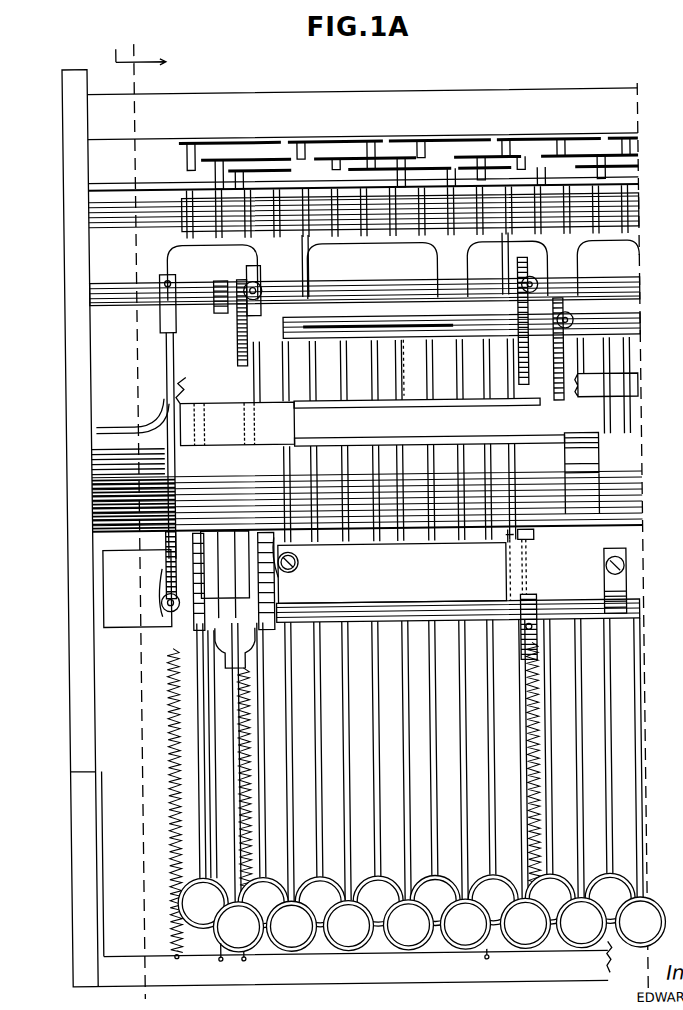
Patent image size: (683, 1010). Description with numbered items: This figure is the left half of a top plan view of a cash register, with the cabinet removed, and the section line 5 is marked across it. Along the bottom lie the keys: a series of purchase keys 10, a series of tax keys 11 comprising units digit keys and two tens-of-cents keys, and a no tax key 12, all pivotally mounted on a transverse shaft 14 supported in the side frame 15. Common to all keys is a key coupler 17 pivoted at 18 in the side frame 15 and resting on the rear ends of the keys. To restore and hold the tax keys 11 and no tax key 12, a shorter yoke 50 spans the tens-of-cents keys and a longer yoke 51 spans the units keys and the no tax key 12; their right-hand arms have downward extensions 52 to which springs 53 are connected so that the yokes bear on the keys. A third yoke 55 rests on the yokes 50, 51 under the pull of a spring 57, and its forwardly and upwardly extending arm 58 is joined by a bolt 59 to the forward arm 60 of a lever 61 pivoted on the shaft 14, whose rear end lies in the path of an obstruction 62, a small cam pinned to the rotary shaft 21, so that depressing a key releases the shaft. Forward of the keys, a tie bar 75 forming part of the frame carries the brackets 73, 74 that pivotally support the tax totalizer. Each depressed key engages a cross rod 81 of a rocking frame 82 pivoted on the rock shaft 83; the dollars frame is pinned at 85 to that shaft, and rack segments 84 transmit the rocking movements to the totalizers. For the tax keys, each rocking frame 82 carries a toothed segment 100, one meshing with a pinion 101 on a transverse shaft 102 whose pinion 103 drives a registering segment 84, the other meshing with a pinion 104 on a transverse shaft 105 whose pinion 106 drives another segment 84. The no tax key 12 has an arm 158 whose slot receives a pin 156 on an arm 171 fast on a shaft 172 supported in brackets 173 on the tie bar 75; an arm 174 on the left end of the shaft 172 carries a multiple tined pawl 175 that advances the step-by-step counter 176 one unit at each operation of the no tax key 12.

The section line 5- 5 is at (382, 516).
The amount or purchase keys 10 is at (630, 954).
The tax keys 11 is at (200, 928).
The no tax key 12 is at (512, 954).
The transverse shaft 14 is at (105, 515).
The side frame 15 is at (87, 648).
The key coupler 17 is at (163, 356).
The pivot 18 is at (100, 440).
The rotary shaft 21 is at (100, 300).
The yoke member 50 is at (228, 404).
The yoke member 51 is at (380, 404).
The downward extensions 52 is at (530, 548).
The springs 53 is at (240, 750).
The third yoke 55 is at (322, 404).
The spring 57 is at (160, 840).
The forwardly and upwardly extending arm 58 is at (160, 568).
The bolt 59 is at (158, 598).
The forward arm 60 is at (160, 558).
The lever 61 is at (158, 400).
The obstruction 62 is at (160, 325).
The bracket 73 is at (293, 565).
The bracket 74 is at (580, 468).
The tie bar 75 is at (410, 626).
The cross rod 81 is at (432, 212).
The rocking frame 82 is at (195, 262).
The rock shaft 83 is at (222, 316).
The rack segment 84 is at (512, 375).
The pin 85 is at (516, 345).
The segment 100 is at (282, 330).
The pinion 101 is at (252, 280).
The transverse shaft 102 is at (315, 292).
The pinion 103 is at (516, 270).
The pinion 104 is at (512, 360).
The transverse shaft 105 is at (414, 345).
The pinion 106 is at (582, 378).
The pin 156 is at (500, 548).
The arm 158 is at (504, 570).
The arm 171 is at (525, 570).
The shaft 172 is at (476, 628).
The brackets 173 is at (288, 578).
The arm 174 is at (216, 754).
The multiple tined pawl 175 is at (240, 656).
The step-by-step counter 176 is at (190, 628).